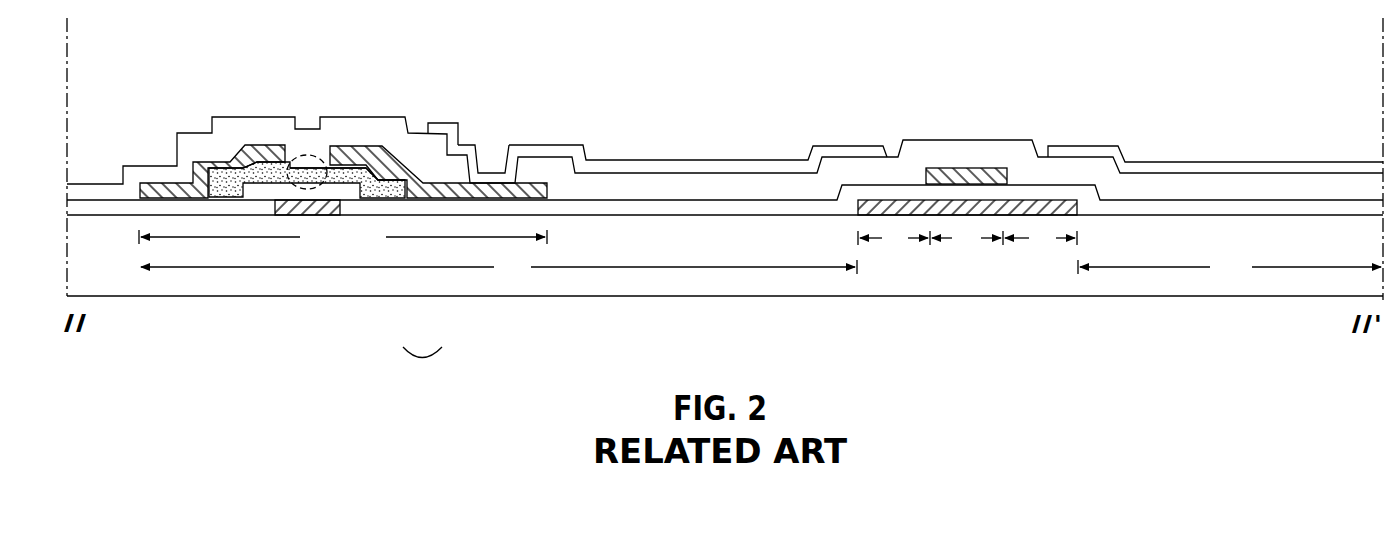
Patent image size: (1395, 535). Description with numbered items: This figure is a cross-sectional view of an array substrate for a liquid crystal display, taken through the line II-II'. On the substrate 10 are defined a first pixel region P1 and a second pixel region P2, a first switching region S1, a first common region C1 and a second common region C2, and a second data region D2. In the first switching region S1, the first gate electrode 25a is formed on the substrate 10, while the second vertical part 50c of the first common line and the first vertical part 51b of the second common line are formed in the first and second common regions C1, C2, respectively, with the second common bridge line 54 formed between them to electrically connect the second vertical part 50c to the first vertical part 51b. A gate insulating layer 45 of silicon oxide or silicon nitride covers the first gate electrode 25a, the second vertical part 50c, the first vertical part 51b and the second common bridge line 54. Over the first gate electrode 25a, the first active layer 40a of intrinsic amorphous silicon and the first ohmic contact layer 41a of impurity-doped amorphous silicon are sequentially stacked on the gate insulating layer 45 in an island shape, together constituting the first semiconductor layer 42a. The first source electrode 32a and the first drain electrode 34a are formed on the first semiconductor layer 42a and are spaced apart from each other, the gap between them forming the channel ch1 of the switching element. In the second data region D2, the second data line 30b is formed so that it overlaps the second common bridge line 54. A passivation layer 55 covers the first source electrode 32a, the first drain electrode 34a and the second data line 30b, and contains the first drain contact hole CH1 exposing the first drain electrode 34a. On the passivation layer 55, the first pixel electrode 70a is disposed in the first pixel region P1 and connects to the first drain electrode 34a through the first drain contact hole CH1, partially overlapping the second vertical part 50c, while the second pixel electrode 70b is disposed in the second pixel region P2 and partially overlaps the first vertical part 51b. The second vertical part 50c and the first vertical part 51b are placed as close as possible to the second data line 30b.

The substrate 10 is at (1378, 250).
The first gate electrode 25a is at (290, 215).
The gate insulating layer 45 is at (728, 205).
The first active layer 40a is at (384, 200).
The first ohmic contact layer 41a is at (402, 198).
The first semiconductor layer 42a is at (422, 367).
The first source electrode 32a is at (254, 152).
The first drain electrode 34a is at (357, 150).
The channel ch1 is at (307, 156).
The passivation layer 55 is at (638, 188).
The first drain contact hole CH1 is at (498, 158).
The first pixel electrode 70a is at (545, 150).
The second vertical part of the first common line 50c is at (883, 207).
The second common bridge line 54 is at (978, 207).
The first vertical part of the second common line 51b is at (1045, 207).
The second data line 30b is at (945, 175).
The second pixel electrode 70b is at (1225, 170).
The first switching region S1 is at (343, 238).
The first pixel region P1 is at (499, 269).
The second pixel region P2 is at (1229, 269).
The first common region C1 is at (894, 238).
The second data region D2 is at (967, 238).
The second common region C2 is at (1041, 238).